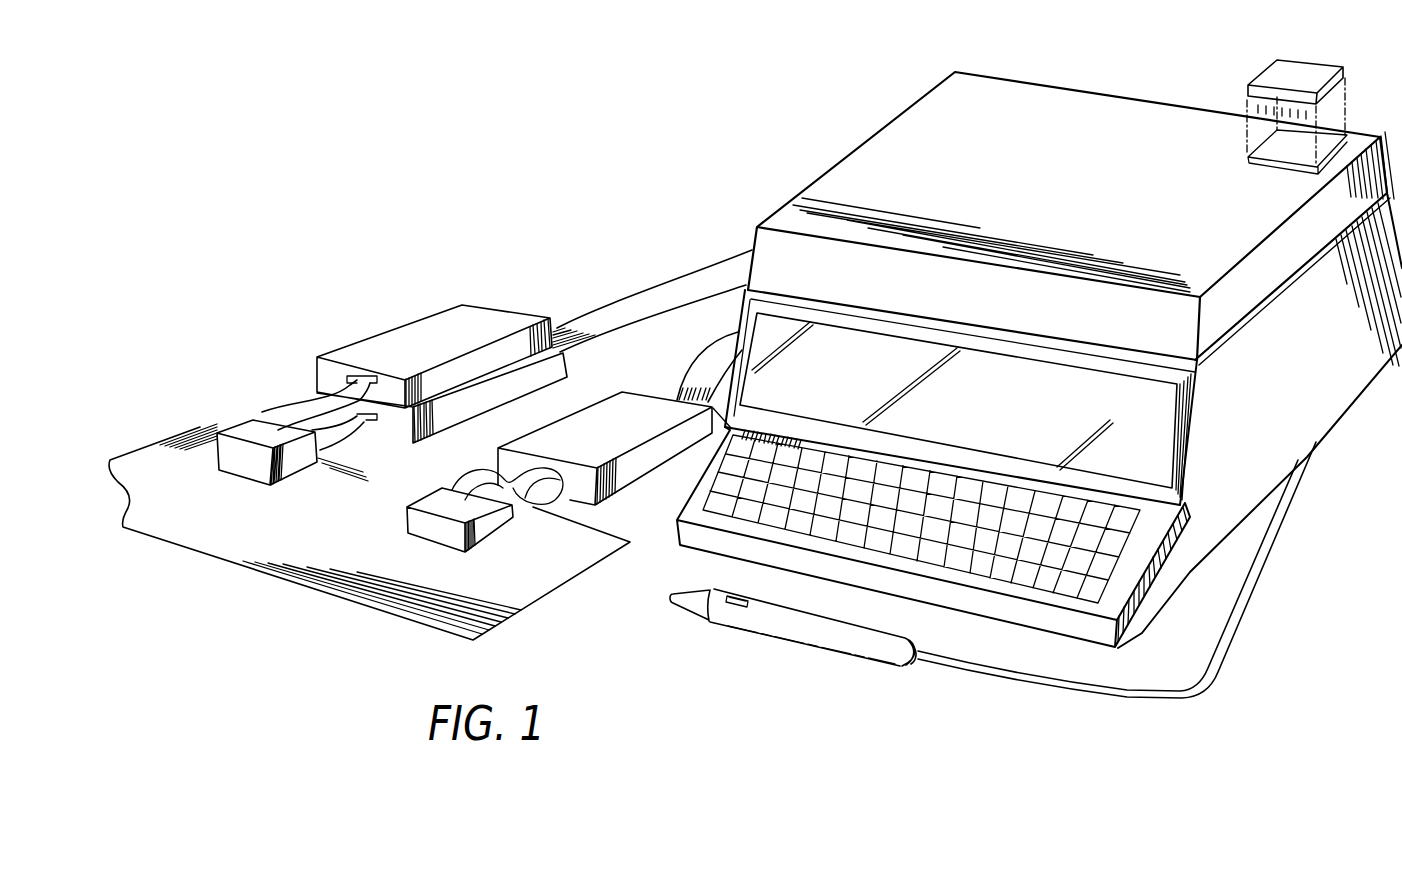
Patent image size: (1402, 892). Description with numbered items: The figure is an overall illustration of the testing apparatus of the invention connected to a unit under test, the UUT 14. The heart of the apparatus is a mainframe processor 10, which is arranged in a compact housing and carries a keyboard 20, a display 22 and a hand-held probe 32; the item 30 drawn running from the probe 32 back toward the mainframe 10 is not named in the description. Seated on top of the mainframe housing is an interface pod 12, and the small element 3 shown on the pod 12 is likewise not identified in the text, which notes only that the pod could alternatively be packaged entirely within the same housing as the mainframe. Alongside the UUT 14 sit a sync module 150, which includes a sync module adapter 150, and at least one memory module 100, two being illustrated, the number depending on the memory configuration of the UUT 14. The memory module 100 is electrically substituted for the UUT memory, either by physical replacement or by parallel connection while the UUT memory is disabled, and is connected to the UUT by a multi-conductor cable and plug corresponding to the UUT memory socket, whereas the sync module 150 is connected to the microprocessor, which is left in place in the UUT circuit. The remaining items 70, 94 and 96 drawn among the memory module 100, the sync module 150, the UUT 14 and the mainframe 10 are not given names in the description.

The memory cartridge 3 is at (1347, 72).
The mainframe processor 10 is at (1307, 392).
The interface pod 12 is at (1207, 207).
The UUT 14 is at (328, 556).
The keyboard 20 is at (1108, 567).
The display 22 is at (1150, 440).
The stylus cable 30 is at (1020, 680).
The probe 32 is at (779, 641).
The connector 70 is at (493, 528).
The interface connector 94 is at (280, 412).
The cable 96 is at (703, 378).
The memory module 100 is at (357, 340).
The sync module 150 is at (592, 410).